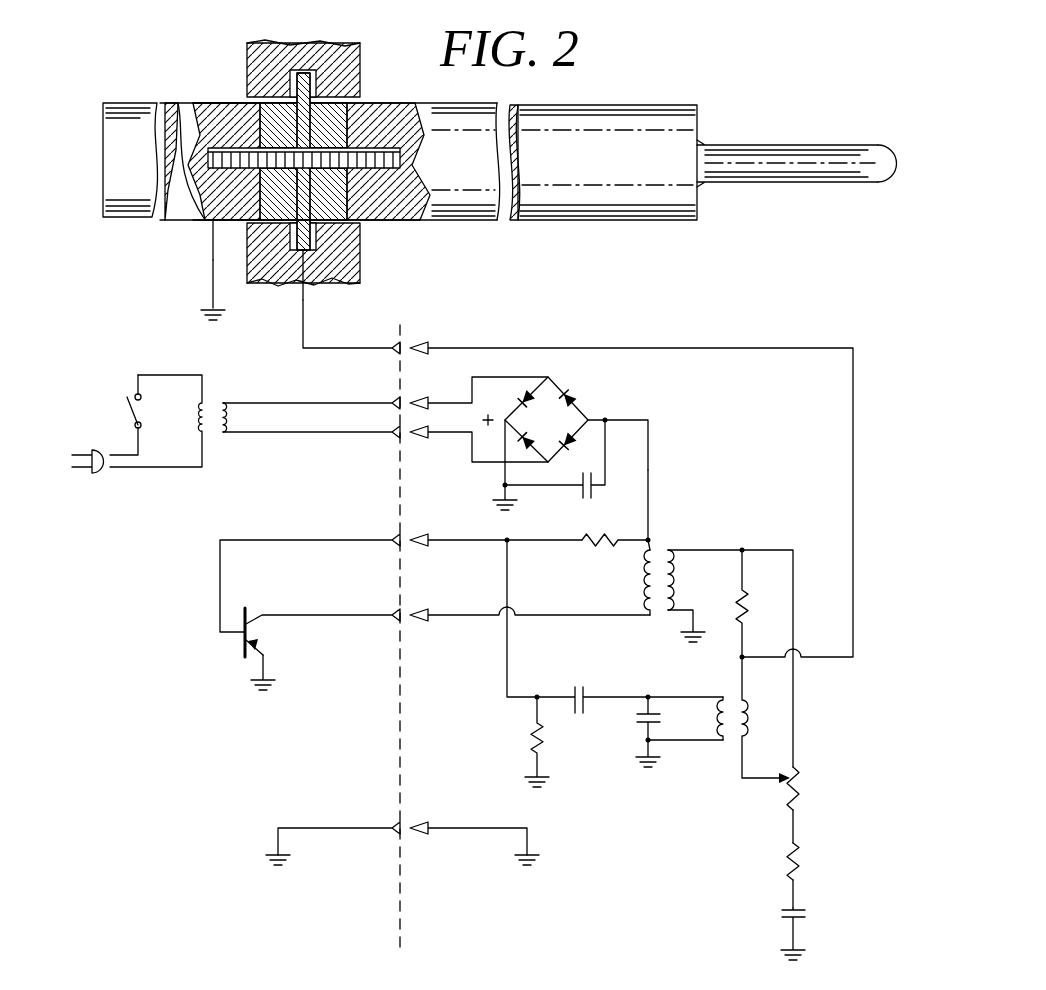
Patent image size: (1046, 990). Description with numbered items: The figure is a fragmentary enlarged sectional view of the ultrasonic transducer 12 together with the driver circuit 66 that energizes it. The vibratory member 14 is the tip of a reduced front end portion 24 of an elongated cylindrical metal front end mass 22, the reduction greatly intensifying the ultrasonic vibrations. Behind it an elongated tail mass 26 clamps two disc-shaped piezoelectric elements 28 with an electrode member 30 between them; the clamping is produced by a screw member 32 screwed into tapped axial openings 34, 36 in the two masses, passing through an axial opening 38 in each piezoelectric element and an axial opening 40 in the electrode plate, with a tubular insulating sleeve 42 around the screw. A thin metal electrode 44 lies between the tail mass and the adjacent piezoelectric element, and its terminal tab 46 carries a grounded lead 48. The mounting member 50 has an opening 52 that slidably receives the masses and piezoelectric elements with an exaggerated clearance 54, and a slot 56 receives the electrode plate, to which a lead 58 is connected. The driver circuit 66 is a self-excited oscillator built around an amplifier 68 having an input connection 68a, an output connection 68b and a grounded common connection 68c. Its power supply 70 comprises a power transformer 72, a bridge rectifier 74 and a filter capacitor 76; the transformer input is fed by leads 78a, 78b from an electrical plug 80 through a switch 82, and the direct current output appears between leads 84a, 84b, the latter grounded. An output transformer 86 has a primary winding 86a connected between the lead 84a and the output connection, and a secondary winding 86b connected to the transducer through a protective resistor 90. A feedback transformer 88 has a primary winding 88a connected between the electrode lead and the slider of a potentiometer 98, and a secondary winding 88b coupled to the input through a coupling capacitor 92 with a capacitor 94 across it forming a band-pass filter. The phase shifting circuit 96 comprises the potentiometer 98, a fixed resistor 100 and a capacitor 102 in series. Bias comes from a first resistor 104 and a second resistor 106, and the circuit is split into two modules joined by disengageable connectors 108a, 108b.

The ultrasonic transducer 12 is at (690, 80).
The vibratory member 14 is at (880, 145).
The front end mass 22 is at (452, 222).
The front end portion 24 is at (790, 170).
The tail mass 26 is at (180, 103).
The piezoelectric elements 28 is at (258, 270).
The electrode member 30 is at (316, 265).
The screw member 32 is at (375, 135).
The tapped axial opening 34 is at (357, 208).
The tapped axial opening 36 is at (210, 195).
The axial opening 38 is at (337, 100).
The axial opening 40 is at (283, 103).
The insulating sleeve 42 is at (353, 125).
The thin metal electrode 44 is at (207, 220).
The terminal tab 46 is at (213, 228).
The lead 48 is at (213, 272).
The mounting member 50 is at (288, 43).
The opening 52 is at (236, 103).
The clearance 54 is at (350, 235).
The slot 56 is at (303, 297).
The lead 58 is at (300, 320).
The driver circuit 66 is at (750, 420).
The amplifier 68 is at (232, 648).
The input connection 68a is at (292, 538).
The output connection 68b is at (312, 616).
The common connection 68c is at (265, 673).
The power supply 70 is at (594, 387).
The power transformer 72 is at (222, 432).
The bridge rectifier 74 is at (590, 423).
The filter capacitor 76 is at (592, 503).
The lead 78a is at (130, 455).
The lead 78b is at (125, 470).
The electrical plug 80 is at (97, 475).
The switch 82 is at (123, 410).
The lead 84a is at (650, 483).
The lead 84b is at (500, 470).
The output transformer 86 is at (665, 613).
The primary winding 86a is at (645, 568).
The secondary winding 86b is at (672, 572).
The feedback transformer 88 is at (732, 740).
The primary winding 88a is at (747, 716).
The secondary winding 88b is at (725, 716).
The protective resistor 90 is at (745, 615).
The coupling capacitor 92 is at (580, 680).
The capacitor 94 is at (637, 718).
The phase shifting circuit 96 is at (832, 903).
The potentiometer 98 is at (800, 776).
The fixed resistor 100 is at (800, 850).
The capacitor 102 is at (805, 914).
The first resistor 104 is at (593, 535).
The second resistor 106 is at (530, 742).
The disengageable connector 108a is at (358, 844).
The disengageable connector 108b is at (425, 844).